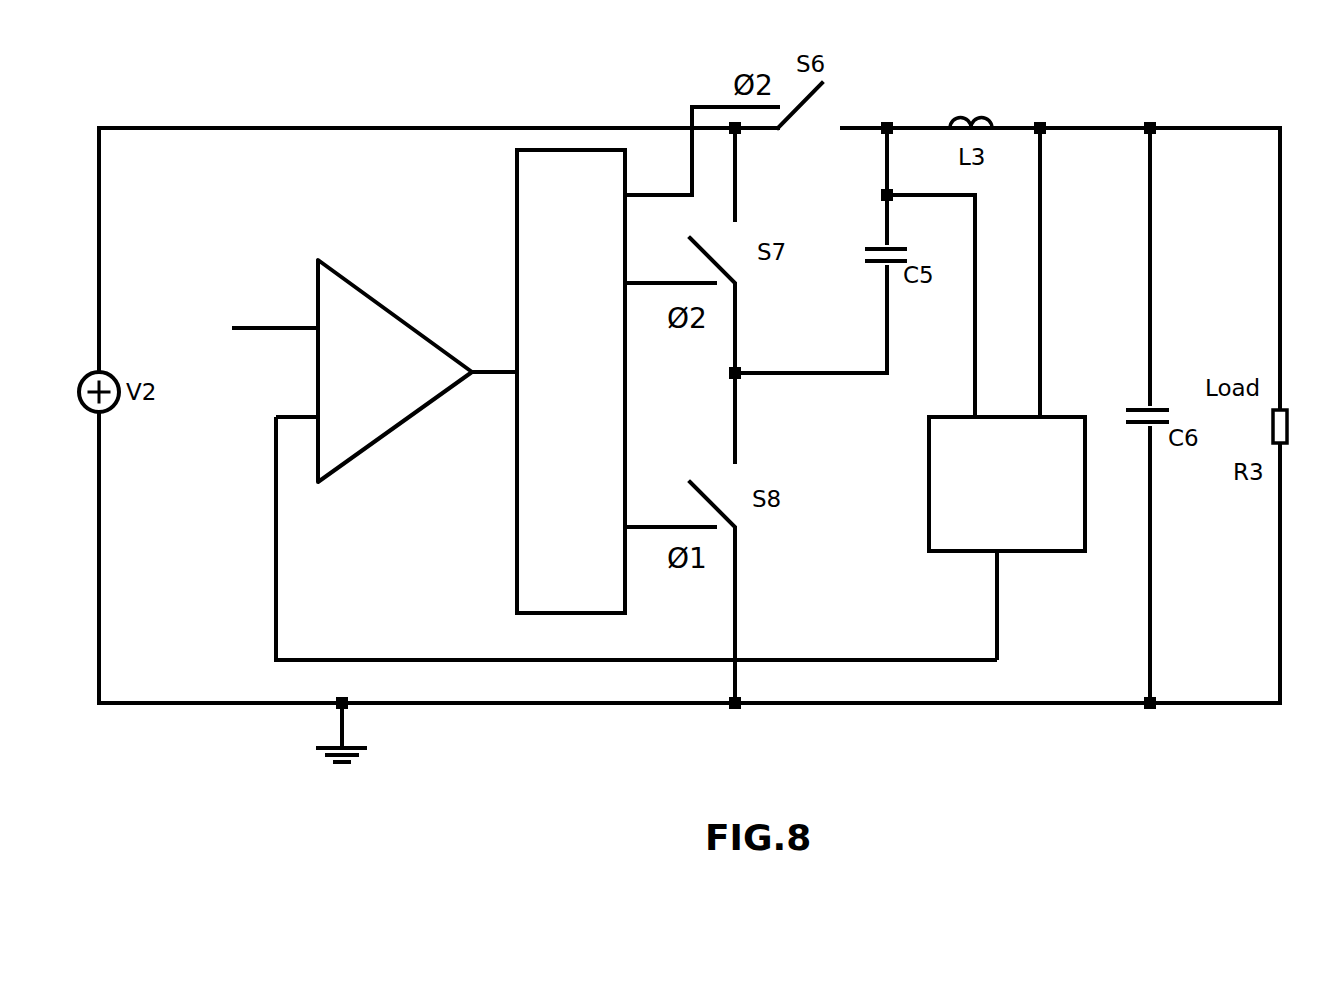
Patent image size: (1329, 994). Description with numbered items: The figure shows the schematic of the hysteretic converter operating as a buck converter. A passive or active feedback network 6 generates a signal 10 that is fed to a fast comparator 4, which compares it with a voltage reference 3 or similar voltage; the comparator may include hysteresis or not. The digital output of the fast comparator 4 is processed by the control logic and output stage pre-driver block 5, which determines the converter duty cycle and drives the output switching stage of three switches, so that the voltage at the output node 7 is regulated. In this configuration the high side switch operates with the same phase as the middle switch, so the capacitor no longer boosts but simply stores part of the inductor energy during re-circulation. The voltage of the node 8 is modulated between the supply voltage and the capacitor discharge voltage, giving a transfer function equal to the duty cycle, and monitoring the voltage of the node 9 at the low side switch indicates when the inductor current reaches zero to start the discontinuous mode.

The voltage reference 3 is at (287, 322).
The fast comparator 4 is at (330, 262).
The control logic and output stage pre-driver block 5 is at (535, 150).
The feedback network 6 is at (1047, 417).
The output node 7 is at (1103, 128).
The node 8 is at (972, 308).
The node 9 is at (788, 373).
The signal 10 is at (270, 520).